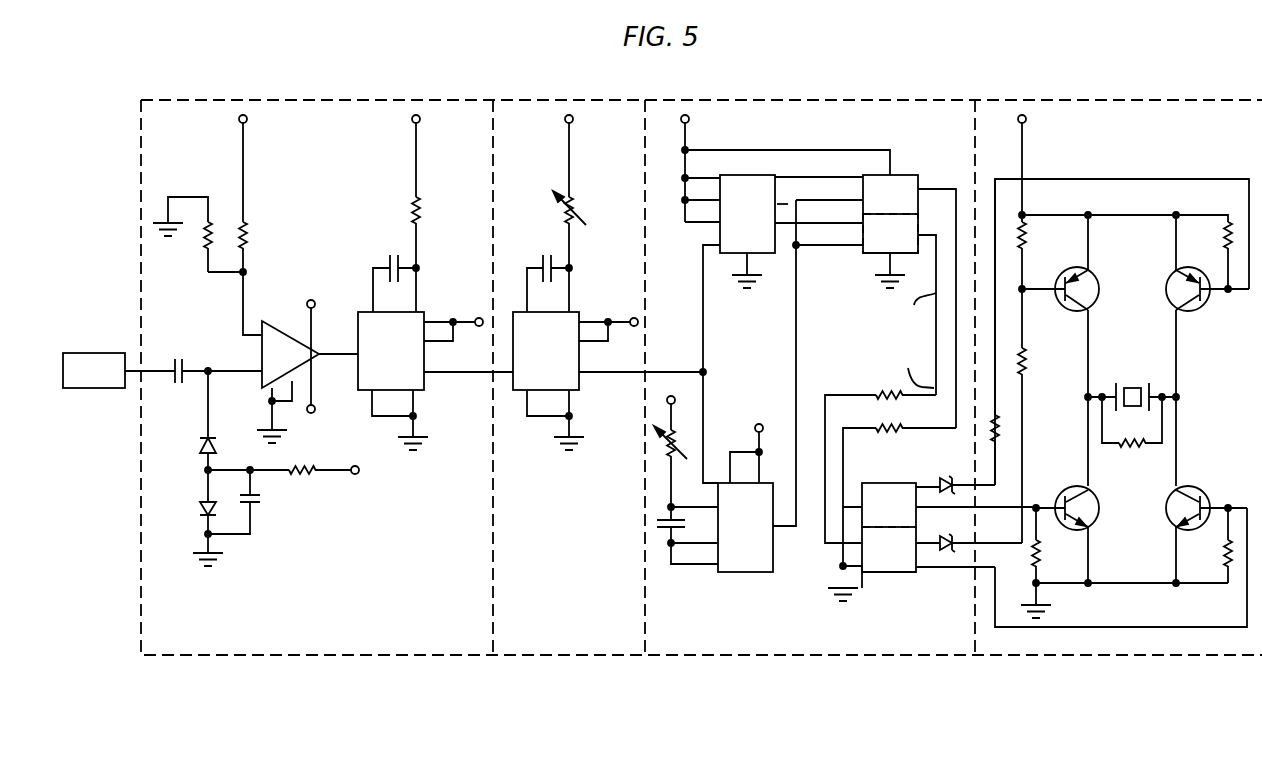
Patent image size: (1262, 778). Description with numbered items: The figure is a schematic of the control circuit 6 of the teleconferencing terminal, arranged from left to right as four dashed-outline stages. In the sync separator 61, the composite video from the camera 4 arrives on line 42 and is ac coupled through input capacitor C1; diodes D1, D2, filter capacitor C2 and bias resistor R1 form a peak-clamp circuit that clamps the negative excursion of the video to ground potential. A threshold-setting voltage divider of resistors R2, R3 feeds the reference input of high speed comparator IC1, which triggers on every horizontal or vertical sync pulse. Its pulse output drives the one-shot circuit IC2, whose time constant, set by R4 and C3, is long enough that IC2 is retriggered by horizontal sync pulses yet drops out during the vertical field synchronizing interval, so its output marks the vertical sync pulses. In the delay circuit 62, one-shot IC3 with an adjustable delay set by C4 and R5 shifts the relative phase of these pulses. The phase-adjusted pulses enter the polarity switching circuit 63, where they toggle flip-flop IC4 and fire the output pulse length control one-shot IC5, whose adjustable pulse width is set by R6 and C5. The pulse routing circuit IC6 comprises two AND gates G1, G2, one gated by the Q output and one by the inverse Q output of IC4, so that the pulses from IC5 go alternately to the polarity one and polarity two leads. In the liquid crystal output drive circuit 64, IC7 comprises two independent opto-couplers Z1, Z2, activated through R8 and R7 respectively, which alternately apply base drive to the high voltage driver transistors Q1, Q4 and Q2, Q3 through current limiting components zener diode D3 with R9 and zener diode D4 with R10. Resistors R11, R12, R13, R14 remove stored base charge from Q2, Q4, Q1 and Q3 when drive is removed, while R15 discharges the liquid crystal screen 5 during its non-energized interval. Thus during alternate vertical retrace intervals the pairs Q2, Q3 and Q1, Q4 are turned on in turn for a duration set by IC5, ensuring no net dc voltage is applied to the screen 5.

The camera 4 is at (110, 353).
The line 42 is at (124, 389).
The liquid crystal screen 5 is at (1130, 388).
The control circuit 6 is at (409, 80).
The sync separator 61 is at (400, 656).
The delay circuit 62 is at (578, 656).
The polarity switching circuit 63 is at (843, 657).
The liquid crystal output drive circuit 64 is at (1118, 657).
The input capacitor C1 is at (184, 358).
The filter capacitor C2 is at (266, 505).
The capacitor C3 is at (386, 261).
The capacitor C4 is at (541, 261).
The capacitor C5 is at (655, 530).
The diode D1 is at (200, 445).
The diode D2 is at (199, 503).
The zener diode D3 is at (944, 477).
The zener diode D4 is at (943, 551).
The bias resistor R1 is at (304, 482).
The resistor R2 is at (209, 231).
The resistor R3 is at (256, 233).
The resistor R4 is at (409, 208).
The resistor R5 is at (582, 202).
The resistor R6 is at (650, 456).
The resistor R7 is at (876, 388).
The resistor R8 is at (878, 423).
The resistor R9 is at (1014, 427).
The resistor R10 is at (1030, 354).
The resistor R11 is at (1031, 244).
The resistor R12 is at (1218, 251).
The resistor R13 is at (1043, 552).
The resistor R14 is at (1220, 552).
The resistor R15 is at (1132, 456).
The high speed comparator IC1 is at (282, 320).
The one-shot circuit IC2 is at (420, 381).
The one-shot IC3 is at (575, 381).
The toggle flip-flop IC4 is at (746, 322).
The output pulse length control one-shot IC5 is at (745, 498).
The pulse routing circuit IC6 is at (914, 175).
The opto-coupler circuit IC7 is at (900, 572).
The AND gate G1 is at (890, 194).
The AND gate G2 is at (890, 233).
The opto-coupler Z1 is at (889, 505).
The opto-coupler Z2 is at (889, 549).
The high voltage driver transistor Q1 is at (1098, 516).
The high voltage driver transistor Q2 is at (1094, 278).
The high voltage driver transistor Q3 is at (1168, 522).
The high voltage driver transistor Q4 is at (1166, 294).